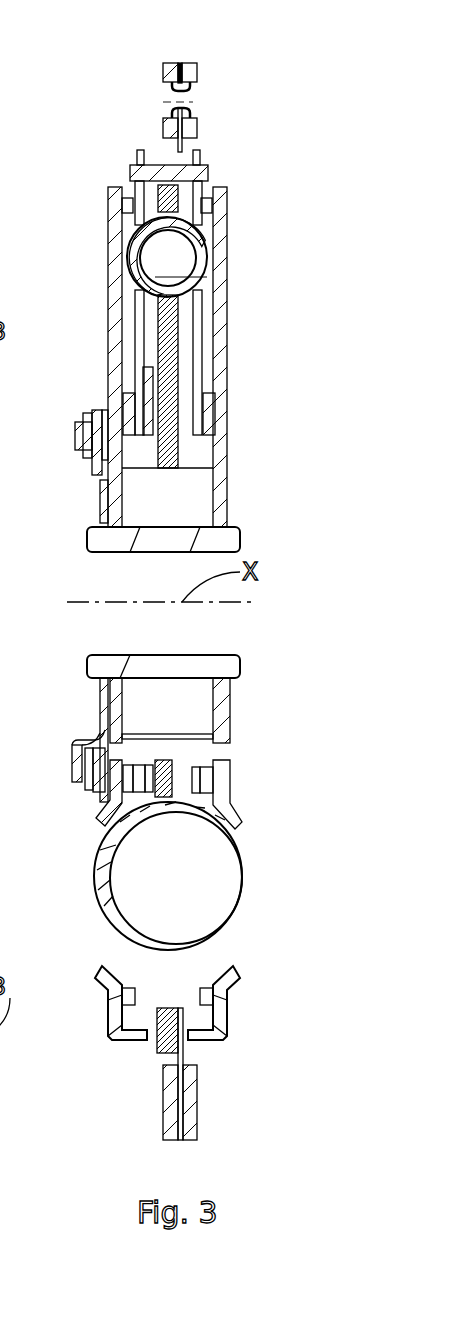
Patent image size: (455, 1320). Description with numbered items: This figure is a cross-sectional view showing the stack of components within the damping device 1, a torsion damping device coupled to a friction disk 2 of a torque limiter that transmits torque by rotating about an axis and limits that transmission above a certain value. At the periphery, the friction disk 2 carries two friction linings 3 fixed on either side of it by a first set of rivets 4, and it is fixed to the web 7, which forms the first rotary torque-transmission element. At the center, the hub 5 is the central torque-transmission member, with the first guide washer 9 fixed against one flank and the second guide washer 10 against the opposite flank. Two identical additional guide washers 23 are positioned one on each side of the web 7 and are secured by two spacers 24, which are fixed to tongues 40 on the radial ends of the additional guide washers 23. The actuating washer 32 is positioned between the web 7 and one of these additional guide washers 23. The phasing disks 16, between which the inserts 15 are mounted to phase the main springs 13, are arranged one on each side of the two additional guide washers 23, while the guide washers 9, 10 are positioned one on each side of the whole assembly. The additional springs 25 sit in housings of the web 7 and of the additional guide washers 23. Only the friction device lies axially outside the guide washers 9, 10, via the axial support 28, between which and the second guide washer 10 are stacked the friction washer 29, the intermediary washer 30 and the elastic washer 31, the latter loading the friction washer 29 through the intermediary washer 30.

The damping device 1 is at (169, 303).
The friction disk 2 is at (199, 131).
The friction linings 3 is at (195, 88).
The first set of rivets 4 is at (199, 72).
The hub 5 is at (189, 532).
The web 7 is at (181, 375).
The first guide washer 9 is at (220, 244).
The second guide washer 10 is at (113, 276).
The springs 13 is at (222, 895).
The inserts 15 is at (0, 930).
The phasing disks 16 is at (124, 401).
The additional guide washers 23 is at (198, 344).
The spacers 24 is at (207, 172).
The additional springs 25 is at (207, 277).
The axial support 28 is at (78, 742).
The friction washer 29 is at (105, 815).
The intermediary washer 30 is at (97, 798).
The elastic washer 31 is at (86, 785).
The actuating washer 32 is at (153, 768).
The tongues 40 is at (138, 155).